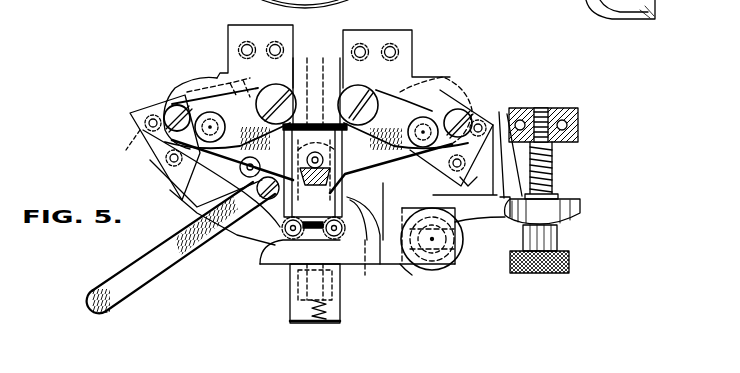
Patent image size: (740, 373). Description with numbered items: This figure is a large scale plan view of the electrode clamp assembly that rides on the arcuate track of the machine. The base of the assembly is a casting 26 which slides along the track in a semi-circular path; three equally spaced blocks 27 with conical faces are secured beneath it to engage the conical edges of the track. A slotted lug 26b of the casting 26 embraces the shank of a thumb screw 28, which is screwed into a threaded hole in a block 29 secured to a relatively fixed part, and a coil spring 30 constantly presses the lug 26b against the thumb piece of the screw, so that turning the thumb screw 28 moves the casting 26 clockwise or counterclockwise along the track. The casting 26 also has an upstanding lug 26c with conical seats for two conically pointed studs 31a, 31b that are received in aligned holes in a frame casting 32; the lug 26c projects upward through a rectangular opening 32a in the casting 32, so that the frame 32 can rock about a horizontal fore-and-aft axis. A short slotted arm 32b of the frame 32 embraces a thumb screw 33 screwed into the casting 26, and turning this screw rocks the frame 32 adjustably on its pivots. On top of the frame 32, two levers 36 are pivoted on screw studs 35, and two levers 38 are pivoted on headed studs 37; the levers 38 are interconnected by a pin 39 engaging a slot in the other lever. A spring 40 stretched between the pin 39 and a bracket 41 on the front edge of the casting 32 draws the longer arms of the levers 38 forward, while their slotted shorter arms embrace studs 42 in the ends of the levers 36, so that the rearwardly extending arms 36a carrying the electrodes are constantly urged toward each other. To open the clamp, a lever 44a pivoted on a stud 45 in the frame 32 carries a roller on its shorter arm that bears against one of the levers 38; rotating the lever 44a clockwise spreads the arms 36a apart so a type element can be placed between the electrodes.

The casting 26 is at (178, 184).
The slotted lug 26b is at (580, 212).
The upstanding lug 26c is at (390, 185).
The blocks 27 is at (160, 168).
The thumb screw 28 is at (571, 265).
The clamp block 29 is at (580, 117).
The coil spring 30 is at (553, 165).
The conically pointed stud 31a is at (290, 284).
The conically pointed stud 31b is at (303, 84).
The frame casting 32 is at (257, 224).
The rectangular opening 32a is at (362, 252).
The short slotted arm 32b is at (402, 270).
The thumb screw 33 is at (462, 256).
The screw studs 35 is at (268, 88).
The levers 36 is at (188, 88).
The rearwardly extending arms 36a is at (241, 34).
The headed studs 37 is at (170, 144).
The levers 38 is at (233, 148).
The pin 39 is at (262, 232).
The spring 40 is at (300, 314).
The bracket 41 is at (293, 314).
The studs 42 is at (161, 109).
The lever 44a is at (118, 297).
The stud 45 is at (197, 208).